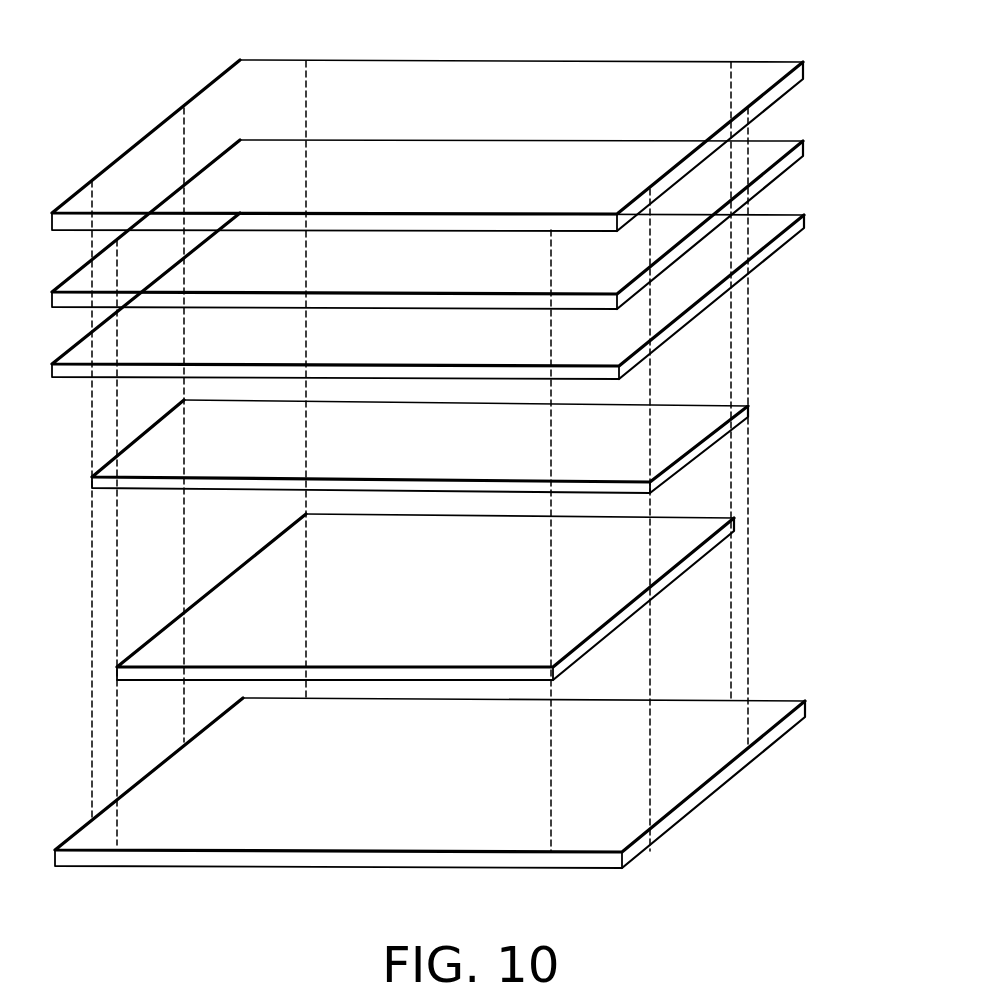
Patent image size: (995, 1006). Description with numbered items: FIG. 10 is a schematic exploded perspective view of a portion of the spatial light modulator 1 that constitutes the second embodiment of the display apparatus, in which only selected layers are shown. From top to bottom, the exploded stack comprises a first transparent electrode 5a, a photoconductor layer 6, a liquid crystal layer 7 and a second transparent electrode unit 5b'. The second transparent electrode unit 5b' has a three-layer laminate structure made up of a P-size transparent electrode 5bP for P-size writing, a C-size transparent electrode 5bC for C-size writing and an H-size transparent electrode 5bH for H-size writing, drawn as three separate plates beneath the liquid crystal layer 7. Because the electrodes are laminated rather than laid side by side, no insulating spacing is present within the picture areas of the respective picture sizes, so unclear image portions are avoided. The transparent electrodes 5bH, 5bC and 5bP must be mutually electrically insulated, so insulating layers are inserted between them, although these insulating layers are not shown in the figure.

The display device / laminated structure 1 is at (170, 97).
The first transparent electrode 5a is at (806, 67).
The photoconductor layer 6 is at (805, 148).
The liquid crystal layer 7 is at (807, 222).
The second transparent electrode unit 5b' is at (480, 620).
The P-size transparent electrode 5bP is at (752, 407).
The C-size transparent electrode 5bC is at (737, 521).
The H-size transparent electrode 5bH is at (767, 700).